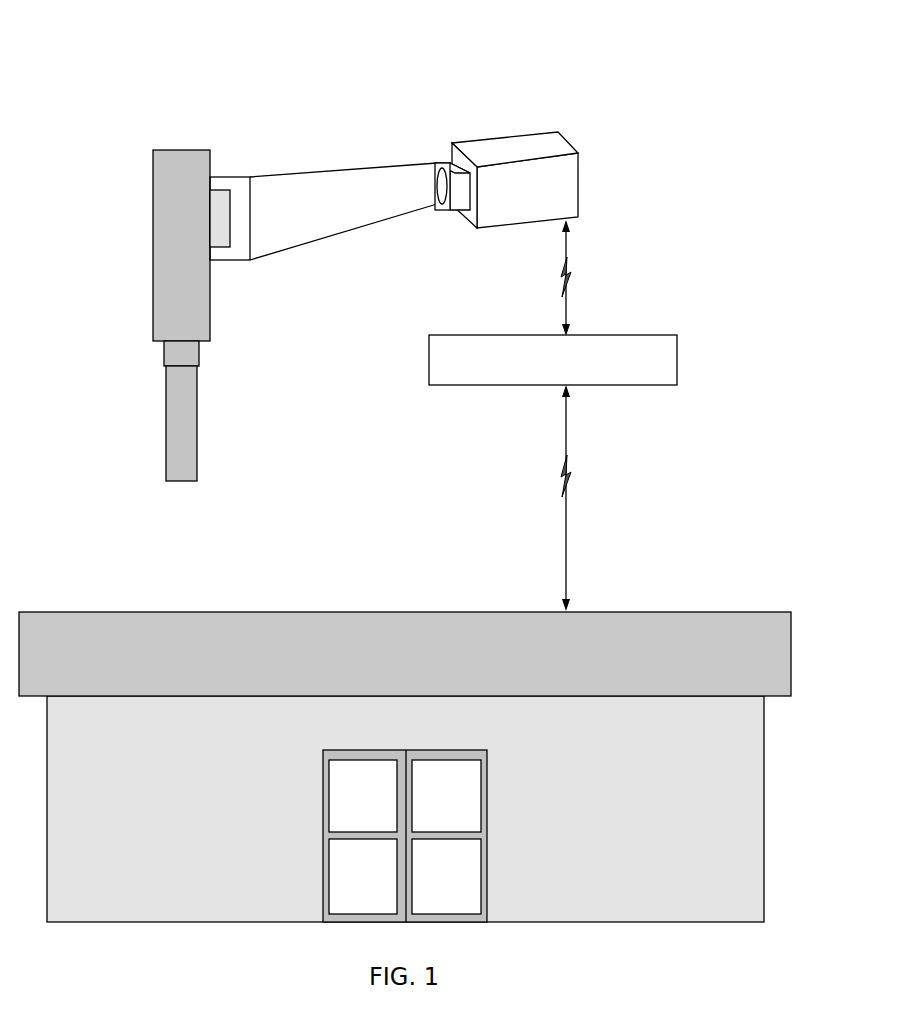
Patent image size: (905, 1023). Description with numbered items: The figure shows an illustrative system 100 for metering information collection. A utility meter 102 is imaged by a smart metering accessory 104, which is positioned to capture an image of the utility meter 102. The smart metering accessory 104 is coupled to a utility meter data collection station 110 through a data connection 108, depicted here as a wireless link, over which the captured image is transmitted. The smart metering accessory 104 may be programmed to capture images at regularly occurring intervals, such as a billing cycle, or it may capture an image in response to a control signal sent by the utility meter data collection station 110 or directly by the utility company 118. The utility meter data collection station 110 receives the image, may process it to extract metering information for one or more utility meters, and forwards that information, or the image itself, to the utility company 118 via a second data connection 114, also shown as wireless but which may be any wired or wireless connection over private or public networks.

The system for metering information collection 100 is at (66, 76).
The utility meter 102 is at (177, 148).
The smart metering accessory 104 is at (506, 180).
The data connection 108 is at (572, 283).
The utility meter data collection station 110 is at (553, 360).
The data connection 114 is at (560, 477).
The utility company 118 is at (318, 611).